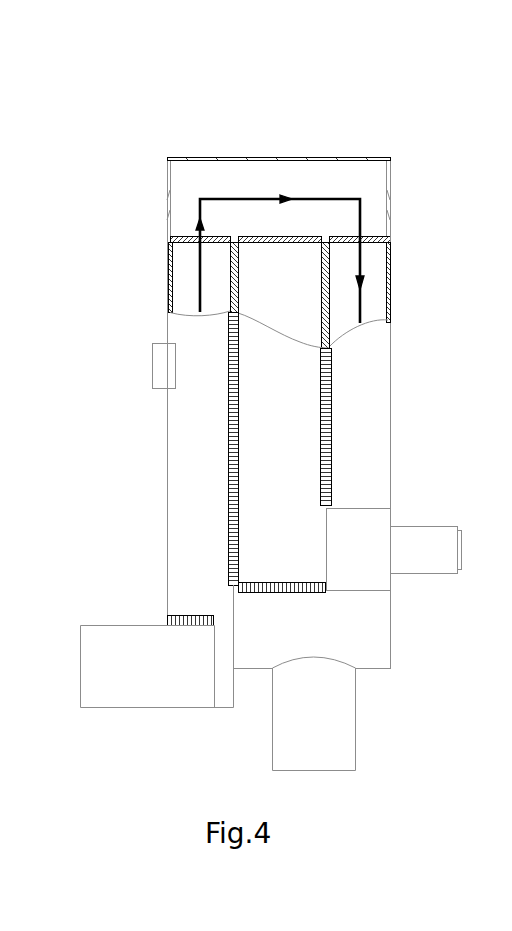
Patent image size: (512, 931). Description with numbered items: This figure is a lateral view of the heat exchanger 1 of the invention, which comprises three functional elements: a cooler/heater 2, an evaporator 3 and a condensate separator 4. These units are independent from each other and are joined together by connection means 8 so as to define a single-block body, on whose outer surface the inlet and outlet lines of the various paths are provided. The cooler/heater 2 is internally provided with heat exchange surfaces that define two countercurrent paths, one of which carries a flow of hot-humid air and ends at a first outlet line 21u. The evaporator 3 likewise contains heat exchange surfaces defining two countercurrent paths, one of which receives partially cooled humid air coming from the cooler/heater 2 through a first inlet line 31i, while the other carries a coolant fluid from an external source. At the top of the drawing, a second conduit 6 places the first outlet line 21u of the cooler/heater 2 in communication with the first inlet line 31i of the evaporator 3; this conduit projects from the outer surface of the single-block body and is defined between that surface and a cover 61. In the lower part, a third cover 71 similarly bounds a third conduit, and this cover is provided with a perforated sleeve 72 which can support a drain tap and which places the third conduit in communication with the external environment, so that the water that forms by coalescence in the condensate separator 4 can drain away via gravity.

The heat exchanger 1 is at (410, 133).
The cooler/heater 2 is at (170, 290).
The evaporator 3 is at (391, 298).
The condensate separator 4 is at (280, 296).
The second conduit 6 is at (376, 200).
The connection means 8 is at (326, 438).
The first outlet line 21u is at (192, 243).
The first inlet line 31i is at (366, 243).
The cover 61 is at (284, 157).
The third cover 71 is at (373, 629).
The perforated sleeve 72 is at (333, 707).